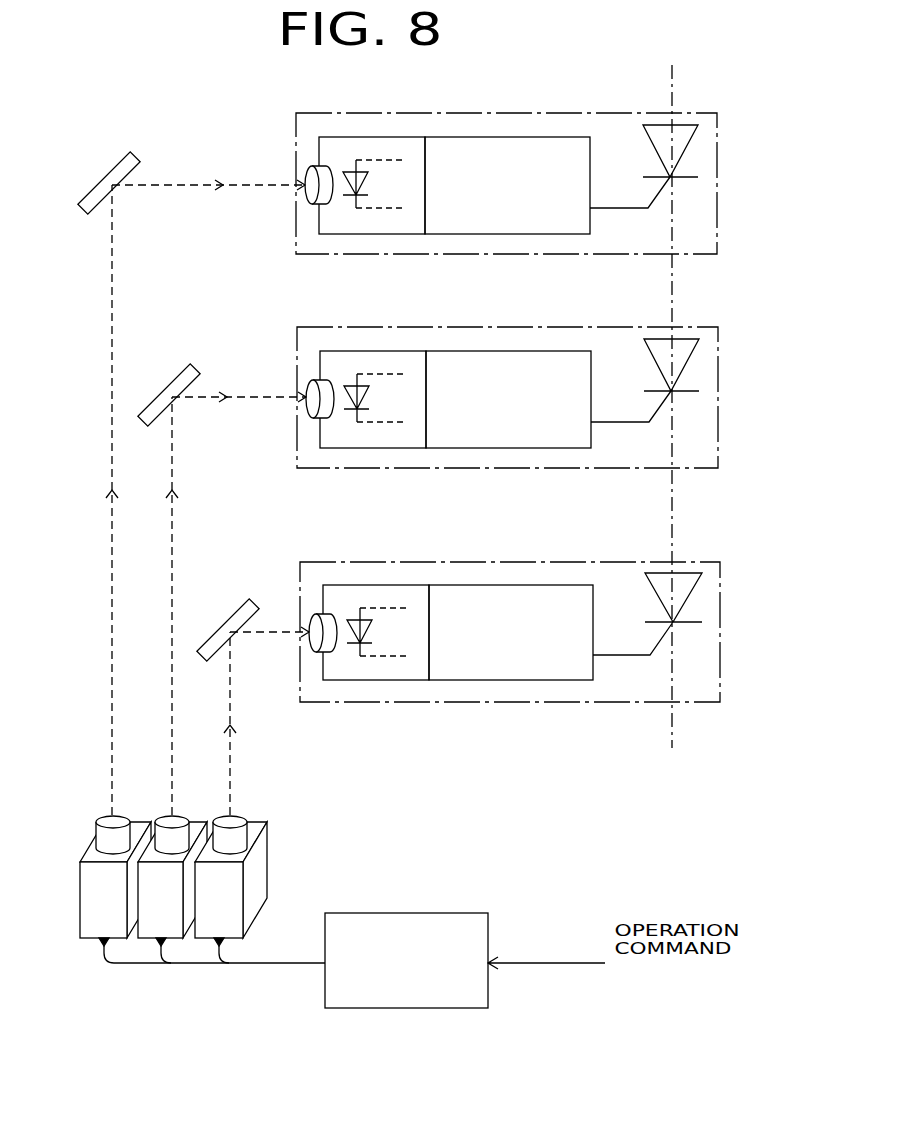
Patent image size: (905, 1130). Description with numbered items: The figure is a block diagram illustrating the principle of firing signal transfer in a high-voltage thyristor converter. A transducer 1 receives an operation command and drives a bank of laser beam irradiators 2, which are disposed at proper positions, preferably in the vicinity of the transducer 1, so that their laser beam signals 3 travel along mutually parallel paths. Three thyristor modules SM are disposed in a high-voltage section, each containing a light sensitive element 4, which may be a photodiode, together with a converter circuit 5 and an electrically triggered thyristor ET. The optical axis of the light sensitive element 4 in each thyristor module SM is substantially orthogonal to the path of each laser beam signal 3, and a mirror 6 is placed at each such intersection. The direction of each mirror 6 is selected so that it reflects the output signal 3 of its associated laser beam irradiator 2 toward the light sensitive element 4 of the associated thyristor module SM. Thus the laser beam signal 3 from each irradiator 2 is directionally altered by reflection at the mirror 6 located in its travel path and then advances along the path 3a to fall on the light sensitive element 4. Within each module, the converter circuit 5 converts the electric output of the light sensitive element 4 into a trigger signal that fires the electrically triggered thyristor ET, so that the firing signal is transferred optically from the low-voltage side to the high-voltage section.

The transducer 1 is at (390, 913).
The laser beam irradiator 2 is at (88, 928).
The laser beam signal 3 is at (113, 258).
The path 3a is at (240, 185).
The light sensitive element 4 is at (367, 383).
The converter circuit 5 is at (509, 383).
The mirror 6 is at (100, 192).
The thyristor module SM is at (508, 394).
The electrically triggered thyristor ET is at (646, 390).